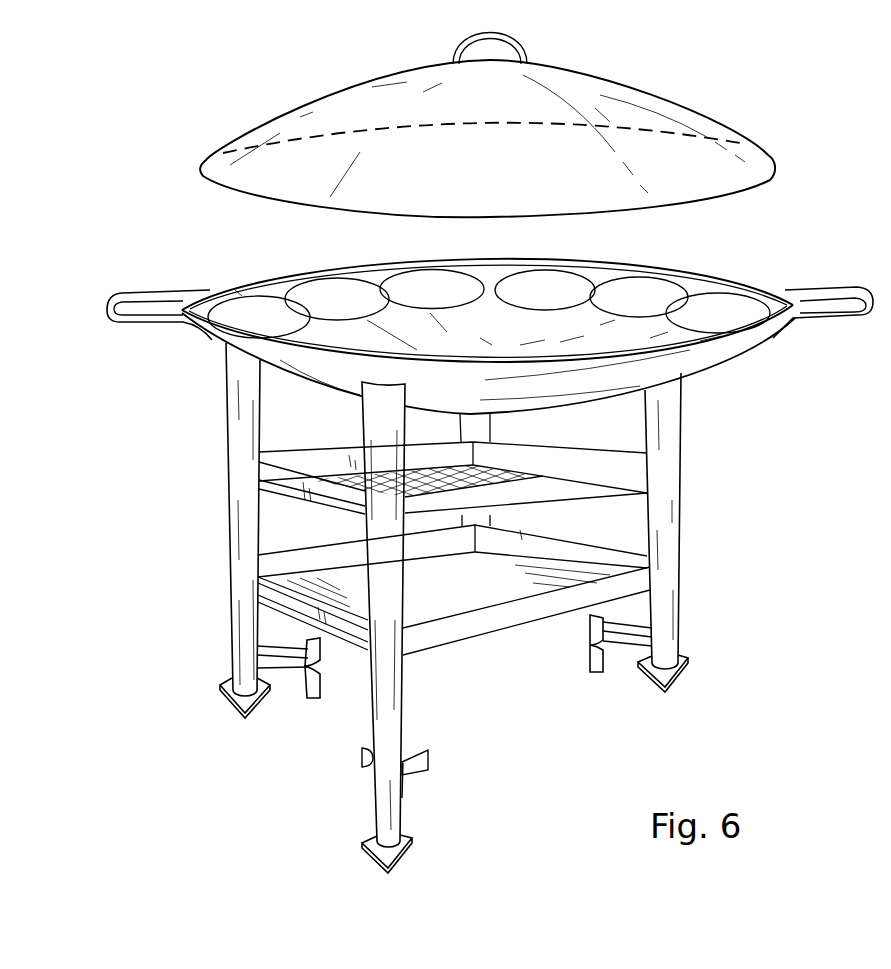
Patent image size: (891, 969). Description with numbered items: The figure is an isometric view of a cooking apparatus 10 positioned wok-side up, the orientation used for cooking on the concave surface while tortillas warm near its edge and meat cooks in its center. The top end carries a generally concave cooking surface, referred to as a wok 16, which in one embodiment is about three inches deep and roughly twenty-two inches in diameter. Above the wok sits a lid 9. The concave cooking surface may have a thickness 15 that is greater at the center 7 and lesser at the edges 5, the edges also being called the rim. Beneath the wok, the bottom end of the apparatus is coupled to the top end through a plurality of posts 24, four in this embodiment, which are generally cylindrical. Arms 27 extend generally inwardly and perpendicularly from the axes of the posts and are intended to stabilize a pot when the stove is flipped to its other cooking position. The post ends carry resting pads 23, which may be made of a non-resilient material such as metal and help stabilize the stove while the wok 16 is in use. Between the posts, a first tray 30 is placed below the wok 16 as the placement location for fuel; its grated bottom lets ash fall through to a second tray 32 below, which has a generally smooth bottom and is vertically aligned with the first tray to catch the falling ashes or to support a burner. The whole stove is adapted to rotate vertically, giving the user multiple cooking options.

The cooking apparatus 10 is at (151, 91).
The lid 9 is at (737, 140).
The edges 5 is at (748, 277).
The thickness 15 is at (302, 312).
The wok 16 is at (557, 322).
The center 7 is at (452, 407).
The first tray 30 is at (632, 478).
The second tray 32 is at (258, 581).
The posts 24 is at (666, 545).
The arms 27 is at (620, 637).
The resting pads 23 is at (393, 852).